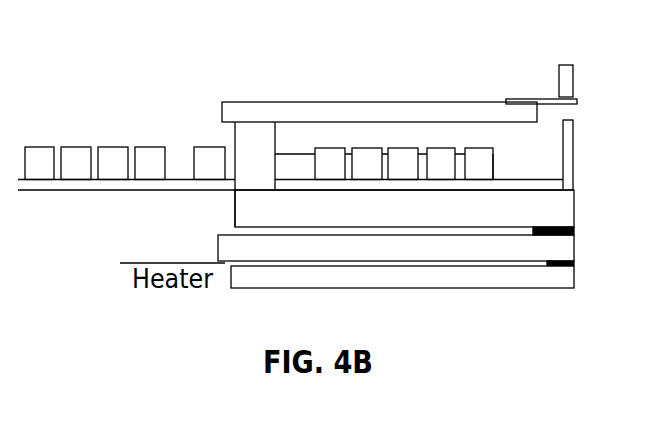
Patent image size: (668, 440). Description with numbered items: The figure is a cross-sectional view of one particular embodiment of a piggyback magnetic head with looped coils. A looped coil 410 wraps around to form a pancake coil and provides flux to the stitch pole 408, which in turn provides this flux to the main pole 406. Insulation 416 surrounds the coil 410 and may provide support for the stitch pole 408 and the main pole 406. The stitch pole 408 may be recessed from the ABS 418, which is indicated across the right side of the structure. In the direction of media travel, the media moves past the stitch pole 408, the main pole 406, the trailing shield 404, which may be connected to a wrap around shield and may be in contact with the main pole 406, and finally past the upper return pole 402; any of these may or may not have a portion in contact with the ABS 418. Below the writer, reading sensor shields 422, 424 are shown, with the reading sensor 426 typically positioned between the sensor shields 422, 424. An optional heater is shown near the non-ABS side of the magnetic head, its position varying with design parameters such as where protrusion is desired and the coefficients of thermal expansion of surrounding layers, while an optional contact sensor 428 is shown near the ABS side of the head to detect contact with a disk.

The upper return pole 402 is at (575, 80).
The trailing shield 404 is at (574, 163).
The main pole 406 is at (543, 98).
The stitch pole 408 is at (407, 102).
The looped coil 410 is at (477, 146).
The insulation 416 is at (458, 218).
The ABS 418 is at (444, 209).
The reading sensor shield 422 is at (218, 250).
The reading sensor shield 424 is at (283, 290).
The reading sensor 426 is at (566, 262).
The contact sensor 428 is at (567, 226).